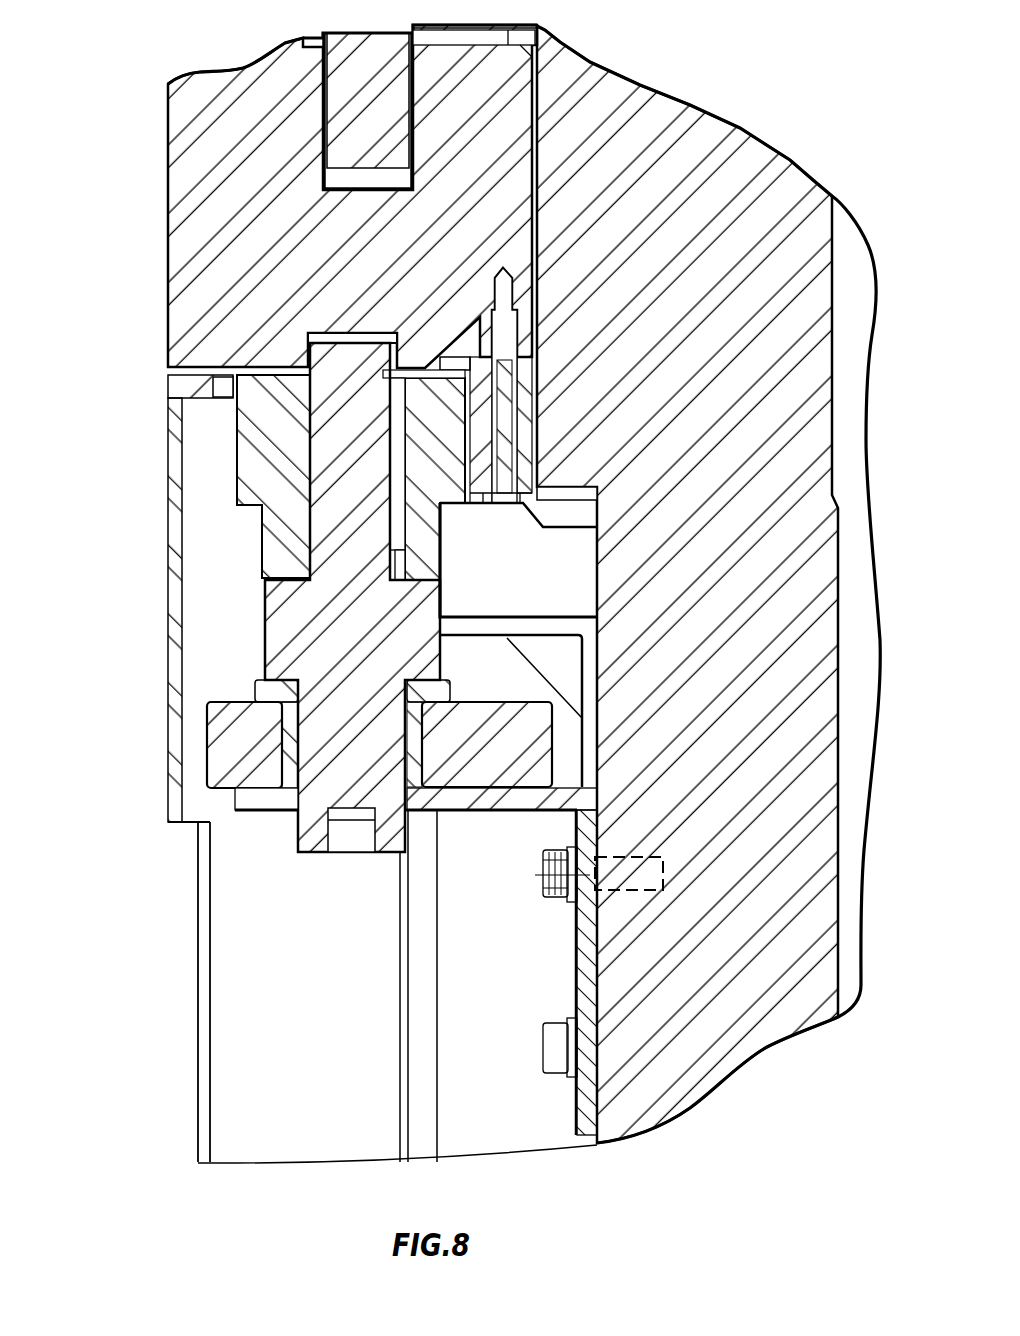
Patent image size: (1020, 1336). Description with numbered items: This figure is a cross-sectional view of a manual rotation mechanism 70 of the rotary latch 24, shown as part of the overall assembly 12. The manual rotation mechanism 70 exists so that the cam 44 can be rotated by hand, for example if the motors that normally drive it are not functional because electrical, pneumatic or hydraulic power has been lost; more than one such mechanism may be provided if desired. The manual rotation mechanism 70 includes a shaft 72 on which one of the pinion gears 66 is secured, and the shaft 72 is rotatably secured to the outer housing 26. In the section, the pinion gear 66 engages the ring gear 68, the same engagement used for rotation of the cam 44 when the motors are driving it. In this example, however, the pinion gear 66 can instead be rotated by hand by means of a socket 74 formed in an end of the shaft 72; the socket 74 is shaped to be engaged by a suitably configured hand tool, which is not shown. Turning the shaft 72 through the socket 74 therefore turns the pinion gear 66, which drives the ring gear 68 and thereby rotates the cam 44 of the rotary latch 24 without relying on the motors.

The housing 12 is at (770, 56).
The cam 44 is at (168, 177).
The pinion gear 66 is at (235, 456).
The rotary latch 24 is at (146, 574).
The shaft 72 is at (268, 637).
The socket 74 is at (373, 840).
The manual rotation mechanism 70 is at (313, 860).
The ring gear 68 is at (479, 507).
The outer housing 26 is at (590, 1147).